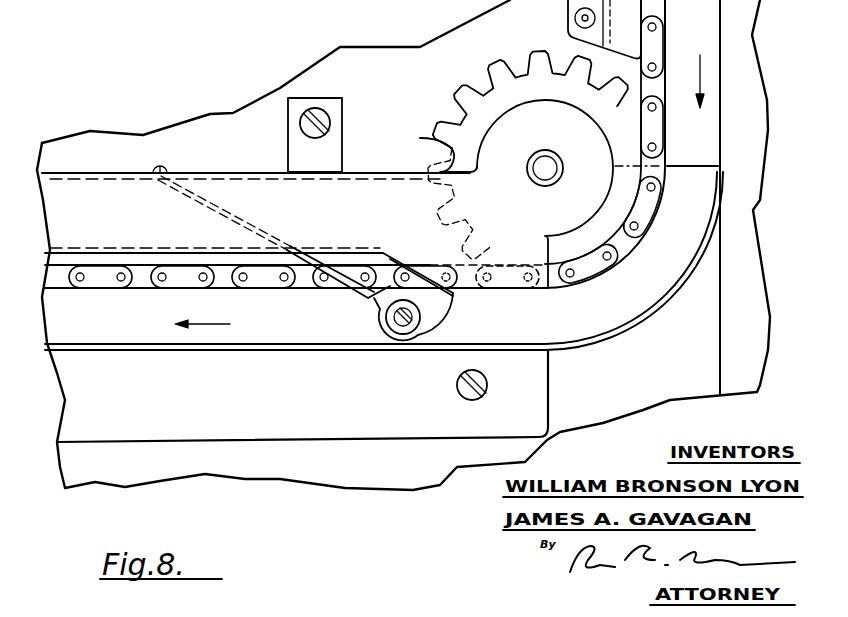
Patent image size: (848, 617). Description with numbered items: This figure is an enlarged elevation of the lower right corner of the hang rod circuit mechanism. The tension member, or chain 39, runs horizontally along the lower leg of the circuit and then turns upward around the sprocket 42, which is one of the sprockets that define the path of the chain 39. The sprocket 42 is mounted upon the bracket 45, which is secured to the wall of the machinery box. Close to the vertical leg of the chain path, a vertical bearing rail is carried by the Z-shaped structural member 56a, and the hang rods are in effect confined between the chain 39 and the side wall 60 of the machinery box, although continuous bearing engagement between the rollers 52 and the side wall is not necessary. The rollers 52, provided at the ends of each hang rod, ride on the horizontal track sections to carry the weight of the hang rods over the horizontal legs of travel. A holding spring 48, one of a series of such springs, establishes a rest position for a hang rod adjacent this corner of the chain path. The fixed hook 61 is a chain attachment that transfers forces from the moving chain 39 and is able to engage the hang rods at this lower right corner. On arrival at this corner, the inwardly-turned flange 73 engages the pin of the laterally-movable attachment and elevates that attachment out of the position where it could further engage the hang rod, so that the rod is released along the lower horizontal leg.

The chain 39 is at (285, 292).
The sprocket 42 is at (457, 90).
The bracket 45 is at (490, 143).
The holding spring 48 is at (362, 302).
The roller 52 is at (393, 335).
The Z-shaped structural member 56a is at (567, 7).
The side wall 60 is at (718, 20).
The fixed hook 61 is at (433, 308).
The inwardly-turned flange 73 is at (320, 247).